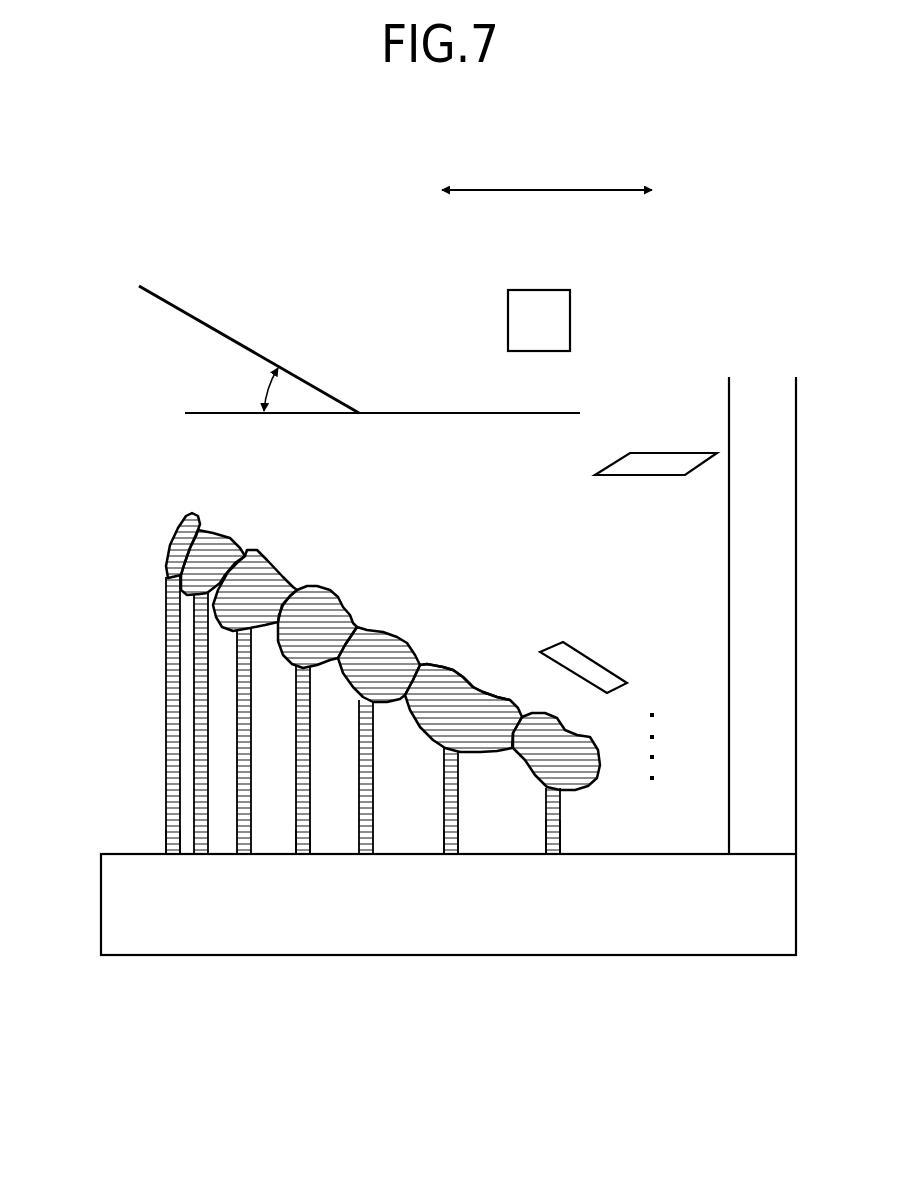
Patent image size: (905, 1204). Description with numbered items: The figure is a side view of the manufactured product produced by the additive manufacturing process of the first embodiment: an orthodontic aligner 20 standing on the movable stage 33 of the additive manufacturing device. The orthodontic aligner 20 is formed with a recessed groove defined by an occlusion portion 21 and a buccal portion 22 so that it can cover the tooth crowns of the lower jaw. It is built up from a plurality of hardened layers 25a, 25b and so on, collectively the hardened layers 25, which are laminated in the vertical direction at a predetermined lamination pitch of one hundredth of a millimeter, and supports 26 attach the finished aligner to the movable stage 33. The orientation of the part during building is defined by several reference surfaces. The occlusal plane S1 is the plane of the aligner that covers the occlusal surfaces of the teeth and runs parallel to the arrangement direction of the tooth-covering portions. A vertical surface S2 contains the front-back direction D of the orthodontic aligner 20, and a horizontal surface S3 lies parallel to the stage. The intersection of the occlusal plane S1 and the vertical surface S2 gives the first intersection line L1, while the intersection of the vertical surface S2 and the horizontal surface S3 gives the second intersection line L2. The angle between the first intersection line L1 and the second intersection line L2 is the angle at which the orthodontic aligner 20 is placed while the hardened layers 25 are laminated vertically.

The orthodontic aligner 20 is at (425, 600).
The occlusion portion 21 is at (482, 690).
The buccal portion 22 is at (297, 635).
The hardened layers 25 is at (446, 714).
The hardened layer 25a is at (556, 853).
The hardened layer 25b is at (562, 847).
The supports 26 is at (444, 835).
The movable stage 33 is at (573, 930).
The front-back direction D is at (547, 174).
The first intersection line L1 is at (245, 342).
The second intersection line L2 is at (403, 413).
The occlusal plane S1 is at (587, 667).
The vertical surface S2 is at (540, 320).
The horizontal surface S3 is at (657, 463).